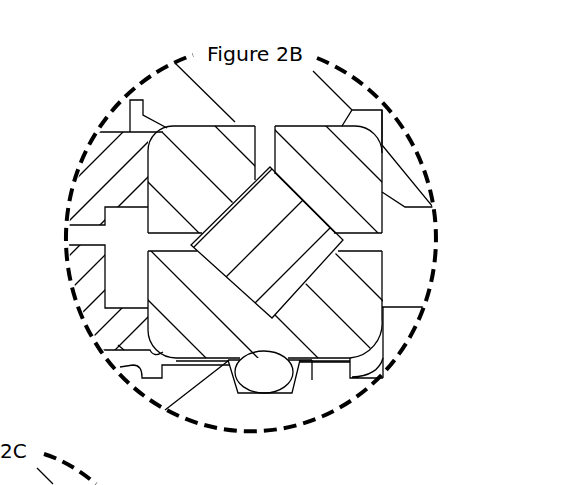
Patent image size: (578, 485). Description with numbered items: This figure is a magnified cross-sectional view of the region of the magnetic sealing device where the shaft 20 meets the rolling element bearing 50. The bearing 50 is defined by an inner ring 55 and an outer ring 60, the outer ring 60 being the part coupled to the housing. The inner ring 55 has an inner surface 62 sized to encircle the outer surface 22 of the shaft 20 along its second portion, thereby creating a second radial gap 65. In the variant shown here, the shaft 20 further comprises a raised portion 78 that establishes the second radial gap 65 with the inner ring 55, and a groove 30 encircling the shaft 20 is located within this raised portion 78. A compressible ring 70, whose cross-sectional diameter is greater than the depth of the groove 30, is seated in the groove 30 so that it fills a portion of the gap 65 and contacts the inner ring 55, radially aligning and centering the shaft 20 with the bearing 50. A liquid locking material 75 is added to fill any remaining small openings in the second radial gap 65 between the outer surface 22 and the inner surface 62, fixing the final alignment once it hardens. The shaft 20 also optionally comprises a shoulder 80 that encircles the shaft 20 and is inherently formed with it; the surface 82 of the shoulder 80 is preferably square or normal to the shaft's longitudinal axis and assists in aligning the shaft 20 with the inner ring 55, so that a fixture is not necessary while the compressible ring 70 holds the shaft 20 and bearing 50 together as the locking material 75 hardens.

The shaft 20 is at (243, 413).
The outer surface 22 is at (120, 367).
The groove 30 is at (277, 394).
The rolling element bearing 50 is at (473, 105).
The inner ring 55 is at (373, 270).
The outer ring 60 is at (344, 162).
The inner surface 62 is at (122, 351).
The second radial gap 65 is at (368, 377).
The compressible ring 70 is at (228, 362).
The liquid locking material 75 is at (312, 380).
The raised portion 78 is at (330, 377).
The shoulder 80 is at (404, 320).
The surface 82 is at (388, 330).